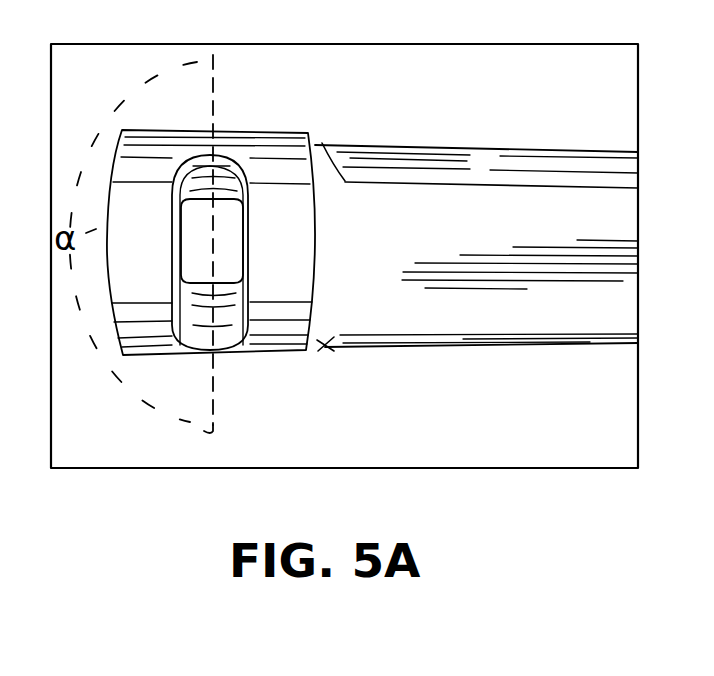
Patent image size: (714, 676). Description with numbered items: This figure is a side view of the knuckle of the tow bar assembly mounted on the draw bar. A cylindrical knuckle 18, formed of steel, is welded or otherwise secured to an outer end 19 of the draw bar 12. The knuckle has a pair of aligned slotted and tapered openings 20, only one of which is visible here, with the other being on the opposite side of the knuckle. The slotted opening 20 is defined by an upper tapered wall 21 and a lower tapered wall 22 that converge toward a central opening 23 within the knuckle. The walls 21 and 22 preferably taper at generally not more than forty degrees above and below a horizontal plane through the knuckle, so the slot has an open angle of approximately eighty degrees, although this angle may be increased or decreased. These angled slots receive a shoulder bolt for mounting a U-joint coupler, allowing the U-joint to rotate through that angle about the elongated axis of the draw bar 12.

The draw bar 12 is at (576, 148).
The cylindrical knuckle 18 is at (141, 358).
The outer end 19 is at (324, 345).
The slotted and tapered opening 20 is at (240, 253).
The upper tapered wall 21 is at (233, 168).
The lower tapered wall 22 is at (227, 335).
The central opening 23 is at (207, 230).